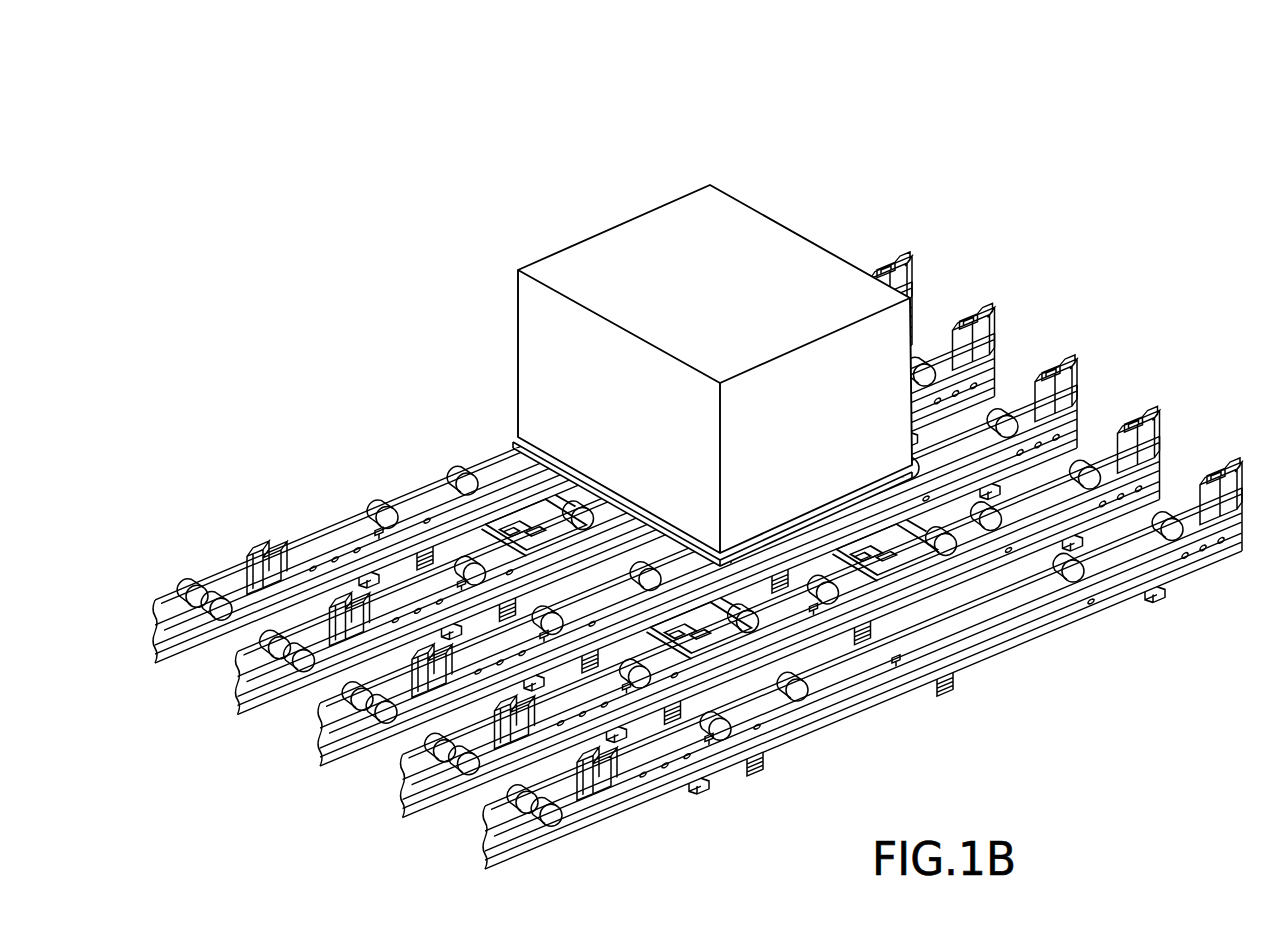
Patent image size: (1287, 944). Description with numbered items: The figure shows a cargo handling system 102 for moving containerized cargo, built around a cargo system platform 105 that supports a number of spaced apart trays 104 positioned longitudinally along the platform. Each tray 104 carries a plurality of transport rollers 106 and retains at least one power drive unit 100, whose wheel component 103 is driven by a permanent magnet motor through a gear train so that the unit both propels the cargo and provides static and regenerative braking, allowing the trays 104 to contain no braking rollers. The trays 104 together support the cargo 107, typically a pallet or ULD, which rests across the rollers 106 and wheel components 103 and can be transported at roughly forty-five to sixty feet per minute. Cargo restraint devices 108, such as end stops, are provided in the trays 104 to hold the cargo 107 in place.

The power drive unit 100 is at (540, 538).
The cargo handling system 102 is at (697, 464).
The wheel component 103 is at (580, 515).
The tray 104 is at (977, 392).
The cargo system platform 105 is at (697, 584).
The transport roller 106 is at (545, 630).
The cargo 107 is at (740, 200).
The cargo restraint device 108 is at (250, 560).